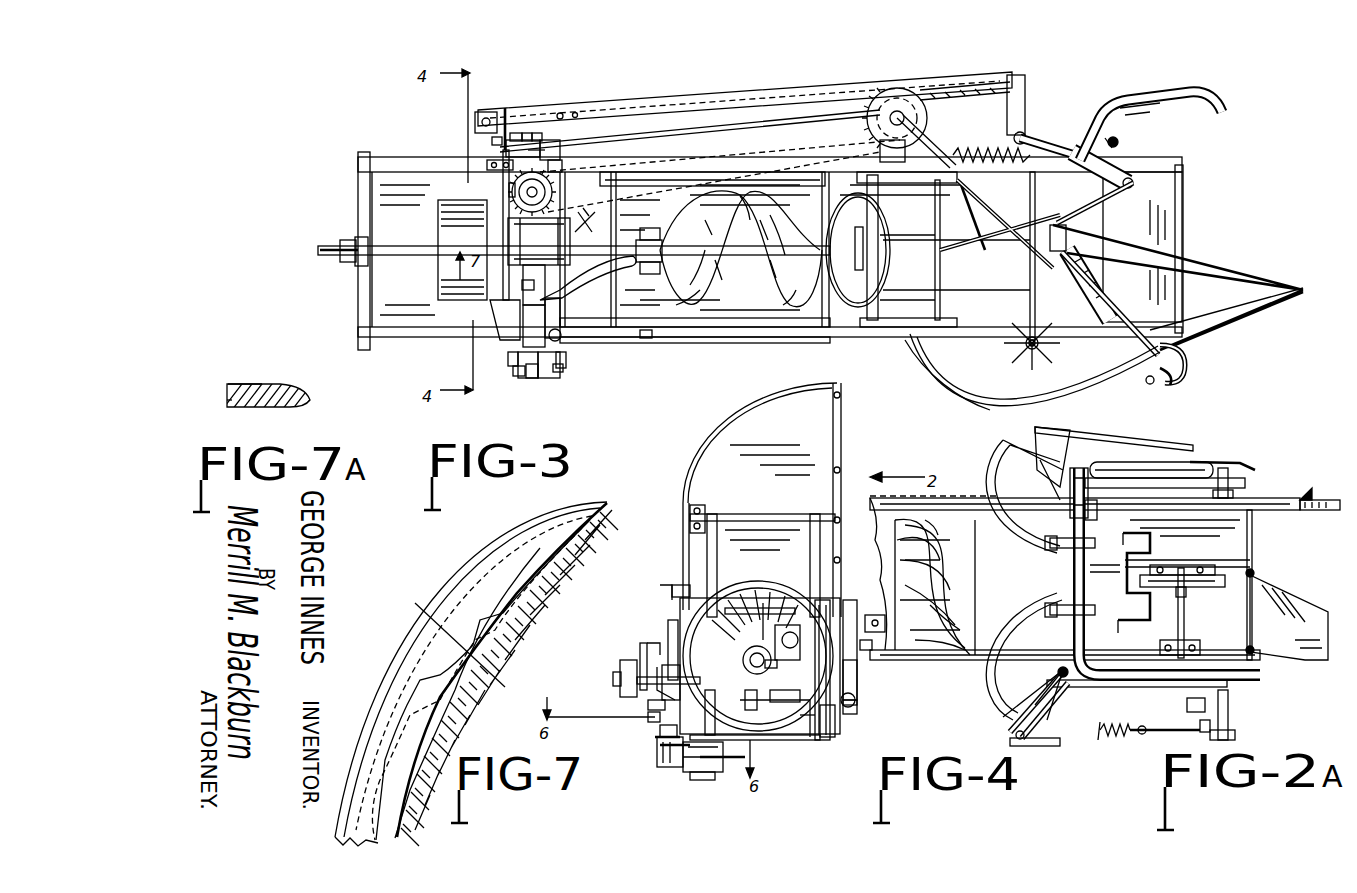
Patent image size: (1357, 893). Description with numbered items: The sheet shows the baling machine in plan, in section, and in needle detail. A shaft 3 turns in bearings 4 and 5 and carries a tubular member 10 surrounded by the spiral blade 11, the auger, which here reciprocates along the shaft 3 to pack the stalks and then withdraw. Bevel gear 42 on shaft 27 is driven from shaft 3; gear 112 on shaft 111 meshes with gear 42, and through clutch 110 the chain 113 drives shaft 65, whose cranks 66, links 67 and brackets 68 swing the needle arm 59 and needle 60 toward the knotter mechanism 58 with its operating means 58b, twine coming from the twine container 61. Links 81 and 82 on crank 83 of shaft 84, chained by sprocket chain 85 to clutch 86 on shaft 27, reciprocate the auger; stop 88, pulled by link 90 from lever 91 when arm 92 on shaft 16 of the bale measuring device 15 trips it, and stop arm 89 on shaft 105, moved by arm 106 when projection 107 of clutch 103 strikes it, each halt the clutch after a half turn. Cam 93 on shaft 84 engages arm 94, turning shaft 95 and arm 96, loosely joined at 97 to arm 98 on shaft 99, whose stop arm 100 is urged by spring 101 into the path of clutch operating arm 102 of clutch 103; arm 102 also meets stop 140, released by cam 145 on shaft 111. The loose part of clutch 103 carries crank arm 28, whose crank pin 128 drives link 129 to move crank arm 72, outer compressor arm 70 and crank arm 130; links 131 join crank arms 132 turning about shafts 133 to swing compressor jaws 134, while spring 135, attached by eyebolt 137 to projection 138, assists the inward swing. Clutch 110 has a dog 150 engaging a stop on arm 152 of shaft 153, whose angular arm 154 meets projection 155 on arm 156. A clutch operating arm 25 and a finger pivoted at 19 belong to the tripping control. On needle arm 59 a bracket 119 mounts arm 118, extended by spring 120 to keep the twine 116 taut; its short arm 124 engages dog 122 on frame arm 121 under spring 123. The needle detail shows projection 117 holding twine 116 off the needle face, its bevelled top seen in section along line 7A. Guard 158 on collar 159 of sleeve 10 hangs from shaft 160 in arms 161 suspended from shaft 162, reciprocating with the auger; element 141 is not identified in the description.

In FIG. 3, the shaft 3 is at (410, 257).
In FIG. 4, the shaft 3 is at (743, 658).
In FIG. 3, the bearing 4 is at (372, 247).
In FIG. 3, the bearing 5 is at (585, 220).
In FIG. 3, the tubular member 10 is at (742, 263).
In FIG. 3, the spiral blade 11 is at (690, 335).
In FIG. 3, the bale measuring device 15 is at (1032, 352).
In FIG. 2A, the bale measuring device 15 is at (1207, 587).
In FIG. 3, the shaft 16 is at (1020, 347).
In FIG. 2A, the shaft 16 is at (1187, 597).
In FIG. 2A, the pivot 19 is at (1207, 463).
In FIG. 3, the clutch operating arm 25 is at (501, 120).
In FIG. 3, the shaft 27 is at (560, 167).
In FIG. 4, the shaft 27 is at (673, 625).
In FIG. 3, the crank arm 28 is at (520, 150).
In FIG. 3, the bevel gear 42 is at (523, 217).
In FIG. 4, the bevel gear 42 is at (715, 667).
In FIG. 3, the knotter mechanism 58 is at (885, 90).
In FIG. 3, the operating means 58b is at (865, 145).
In FIG. 3, the needle arm 59 is at (1087, 285).
In FIG. 2A, the needle arm 59 is at (1073, 570).
In FIG. 3, the needle 60 is at (997, 400).
In FIG. 7A, the needle 60 is at (250, 371).
In FIG. 7, the needle 60 is at (482, 540).
In FIG. 2A, the needle 60 is at (1050, 543).
In FIG. 3, the twine container 61 is at (880, 263).
In FIG. 3, the shaft 65 is at (1007, 97).
In FIG. 3, the crank arm 66 is at (993, 150).
In FIG. 3, the links 67 is at (987, 205).
In FIG. 3, the brackets 68 is at (1103, 318).
In FIG. 3, the outer compressor arm 70 is at (1187, 100).
In FIG. 3, the crank arm 72 is at (1047, 140).
In FIG. 3, the link 81 is at (560, 367).
In FIG. 4, the link 81 is at (782, 670).
In FIG. 3, the link 82 is at (560, 335).
In FIG. 4, the link 82 is at (763, 603).
In FIG. 3, the crank 83 is at (560, 320).
In FIG. 4, the crank 83 is at (798, 635).
In FIG. 3, the crank shaft 84 is at (533, 367).
In FIG. 4, the crank shaft 84 is at (880, 627).
In FIG. 3, the sprocket chain 85 is at (513, 360).
In FIG. 4, the sprocket chain 85 is at (863, 645).
In FIG. 3, the clutch 86 is at (522, 350).
In FIG. 4, the clutch 86 is at (860, 680).
In FIG. 3, the stop dog 88 is at (558, 367).
In FIG. 3, the stop arm 89 is at (520, 365).
In FIG. 4, the stop arm 89 is at (855, 705).
In FIG. 3, the link 90 is at (735, 343).
In FIG. 2A, the link 90 is at (1167, 623).
In FIG. 2A, the lever 91 is at (1190, 633).
In FIG. 2A, the arm 92 is at (1180, 613).
In FIG. 3, the cam 93 is at (532, 373).
In FIG. 4, the cam 93 is at (860, 597).
In FIG. 3, the arm 94 is at (527, 345).
In FIG. 4, the arm 94 is at (850, 600).
In FIG. 4, the shaft 95 is at (865, 600).
In FIG. 3, the arm 96 is at (523, 290).
In FIG. 4, the arm 96 is at (807, 745).
In FIG. 3, the loose connection 97 is at (513, 232).
In FIG. 4, the loose connection 97 is at (730, 740).
In FIG. 3, the arm 98 is at (512, 189).
In FIG. 4, the arm 98 is at (743, 740).
In FIG. 4, the shaft 99 is at (653, 727).
In FIG. 4, the stop arm 100 is at (645, 700).
In FIG. 4, the spring 101 is at (670, 680).
In FIG. 3, the clutch operating arm 102 is at (513, 148).
In FIG. 4, the clutch operating arm 102 is at (620, 673).
In FIG. 3, the clutch 103 is at (528, 150).
In FIG. 4, the clutch 103 is at (615, 687).
In FIG. 3, the shaft 105 is at (500, 320).
In FIG. 4, the shaft 105 is at (820, 738).
In FIG. 3, the arm 106 is at (537, 150).
In FIG. 4, the arm 106 is at (657, 667).
In FIG. 4, the projection 107 is at (653, 713).
In FIG. 3, the clutch 110 is at (520, 150).
In FIG. 4, the clutch 110 is at (720, 780).
In FIG. 4, the shaft 111 is at (703, 780).
In FIG. 3, the gear 112 is at (510, 187).
In FIG. 4, the gear 112 is at (765, 706).
In FIG. 3, the chain 113 is at (807, 153).
In FIG. 4, the chain 113 is at (670, 753).
In FIG. 3, the twine 116 is at (1183, 270).
In FIG. 7A, the twine 116 is at (233, 400).
In FIG. 7, the twine 116 is at (520, 620).
In FIG. 7A, the projection 117 is at (298, 393).
In FIG. 7, the projection 117 is at (463, 693).
In FIG. 3, the arm 118 is at (1240, 315).
In FIG. 2A, the arm 118 is at (1112, 462).
In FIG. 3, the bracket 119 is at (1177, 333).
In FIG. 2A, the bracket 119 is at (1092, 517).
In FIG. 2A, the spring 120 is at (1087, 473).
In FIG. 3, the arm 121 is at (1190, 355).
In FIG. 2A, the arm 121 is at (1263, 500).
In FIG. 2A, the dog 122 is at (1307, 497).
In FIG. 3, the spring 123 is at (1177, 375).
In FIG. 2A, the spring 123 is at (1327, 510).
In FIG. 3, the short arm 124 is at (1150, 384).
In FIG. 3, the crank pin 128 is at (483, 112).
In FIG. 3, the link 129 is at (625, 105).
In FIG. 3, the crank arm 130 is at (1130, 167).
In FIG. 3, the links 131 is at (1057, 225).
In FIG. 2A, the links 131 is at (1060, 707).
In FIG. 3, the crank arms 132 is at (973, 255).
In FIG. 2A, the crank arms 132 is at (1033, 730).
In FIG. 3, the shafts 133 is at (1019, 137).
In FIG. 2A, the shafts 133 is at (1067, 677).
In FIG. 3, the compressor jaws 134 is at (935, 272).
In FIG. 2A, the compressor jaws 134 is at (1000, 483).
In FIG. 2A, the spring 135 is at (1103, 740).
In FIG. 3, the eyebolt 137 is at (1110, 140).
In FIG. 2A, the eyebolt 137 is at (1203, 733).
In FIG. 3, the projection 138 is at (1120, 147).
In FIG. 2A, the projection 138 is at (1207, 713).
In FIG. 3, the stop 140 is at (540, 144).
In FIG. 4, the post 141 is at (724, 712).
In FIG. 4, the cam 145 is at (788, 707).
In FIG. 4, the dog 150 is at (683, 780).
In FIG. 4, the arm 152 is at (673, 770).
In FIG. 4, the shaft 153 is at (663, 767).
In FIG. 4, the angular arm 154 is at (663, 737).
In FIG. 3, the projection 155 is at (497, 141).
In FIG. 4, the projection 155 is at (668, 665).
In FIG. 4, the arm 156 is at (640, 647).
In FIG. 3, the guard 158 is at (648, 232).
In FIG. 4, the guard 158 is at (713, 610).
In FIG. 3, the collar 159 is at (652, 250).
In FIG. 4, the shaft 160 is at (703, 600).
In FIG. 4, the arms 161 is at (813, 550).
In FIG. 4, the shaft 162 is at (727, 513).
In FIG. 7, the section line 7A is at (456, 650).